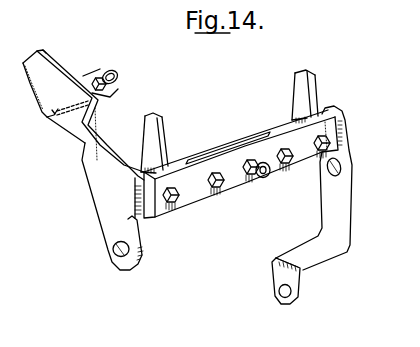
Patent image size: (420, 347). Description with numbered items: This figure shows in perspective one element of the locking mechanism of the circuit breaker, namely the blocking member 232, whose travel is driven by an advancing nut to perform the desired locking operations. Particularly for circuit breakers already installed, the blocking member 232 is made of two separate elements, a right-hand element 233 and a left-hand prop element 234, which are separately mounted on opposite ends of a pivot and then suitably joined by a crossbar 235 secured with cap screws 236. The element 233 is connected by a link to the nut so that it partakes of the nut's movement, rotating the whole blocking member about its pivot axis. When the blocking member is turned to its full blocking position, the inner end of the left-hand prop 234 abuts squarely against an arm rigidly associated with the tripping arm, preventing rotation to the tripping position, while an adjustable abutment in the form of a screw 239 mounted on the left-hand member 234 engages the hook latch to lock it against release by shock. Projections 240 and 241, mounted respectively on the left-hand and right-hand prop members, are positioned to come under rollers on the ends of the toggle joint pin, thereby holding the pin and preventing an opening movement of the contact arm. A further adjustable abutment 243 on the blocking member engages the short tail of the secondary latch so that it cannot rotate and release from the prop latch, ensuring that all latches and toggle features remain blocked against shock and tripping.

The blocking member 232 is at (221, 101).
The right-hand element 233 is at (343, 124).
The left-hand prop element 234 is at (98, 168).
The crossbar 235 is at (235, 148).
The cap screws 236 is at (177, 201).
The adjustable abutment screw 239 is at (111, 77).
The left-hand projection 240 is at (153, 113).
The right-hand projection 241 is at (298, 72).
The adjustable abutment 243 is at (263, 177).